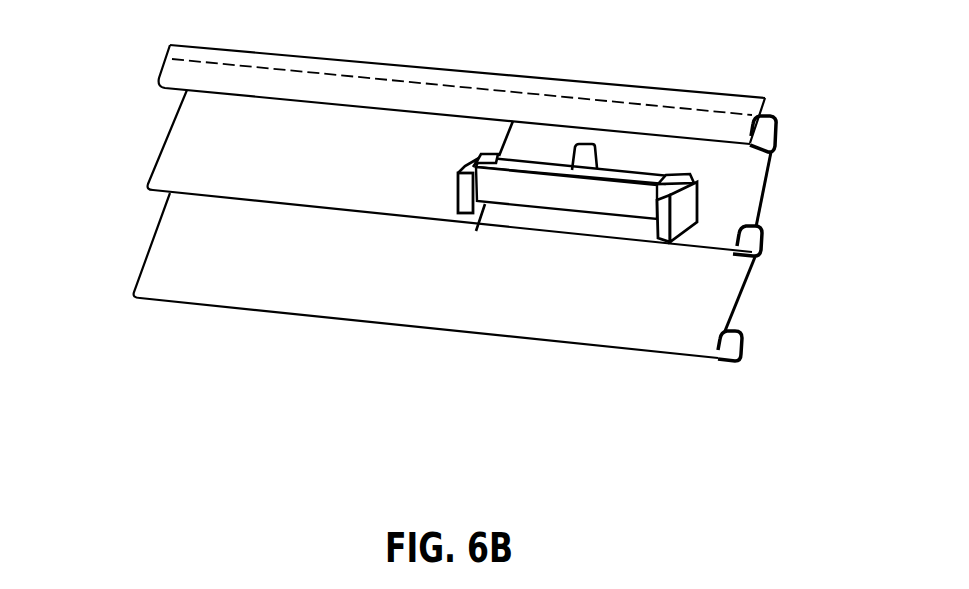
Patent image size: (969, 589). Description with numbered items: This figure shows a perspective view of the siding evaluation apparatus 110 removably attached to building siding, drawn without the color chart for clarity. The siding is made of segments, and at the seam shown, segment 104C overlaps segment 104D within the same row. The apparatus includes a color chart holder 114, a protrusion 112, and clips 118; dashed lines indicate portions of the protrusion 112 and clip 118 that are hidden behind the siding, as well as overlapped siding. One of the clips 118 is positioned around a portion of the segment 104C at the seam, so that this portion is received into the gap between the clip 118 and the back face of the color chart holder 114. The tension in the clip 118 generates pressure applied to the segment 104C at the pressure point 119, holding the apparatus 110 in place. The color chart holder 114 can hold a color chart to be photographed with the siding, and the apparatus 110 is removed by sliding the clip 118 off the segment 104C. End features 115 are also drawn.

The segment 104C is at (172, 127).
The segment 104D is at (742, 200).
The siding evaluation apparatus 110 is at (632, 220).
The protrusion 112 is at (587, 143).
The color chart holder 114 is at (602, 218).
The end clip 115 is at (463, 218).
The clip 118 is at (502, 158).
The pressure point 119 is at (480, 157).